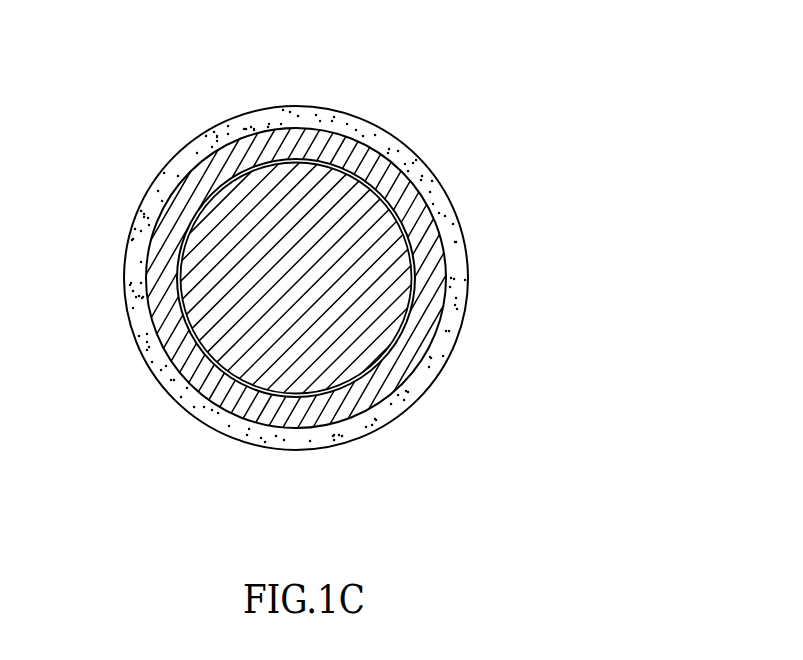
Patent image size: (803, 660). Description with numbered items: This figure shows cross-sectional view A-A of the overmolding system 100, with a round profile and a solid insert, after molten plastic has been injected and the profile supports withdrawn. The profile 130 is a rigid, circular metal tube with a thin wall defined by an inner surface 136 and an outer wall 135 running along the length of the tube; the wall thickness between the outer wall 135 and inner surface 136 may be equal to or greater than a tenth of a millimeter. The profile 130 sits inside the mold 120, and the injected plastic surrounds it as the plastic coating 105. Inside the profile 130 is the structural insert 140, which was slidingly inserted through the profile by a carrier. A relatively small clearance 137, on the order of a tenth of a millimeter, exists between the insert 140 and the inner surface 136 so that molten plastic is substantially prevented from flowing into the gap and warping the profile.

The overmolding system 100 is at (547, 89).
The plastic coating 105 is at (407, 398).
The mold 120 is at (178, 152).
The profile 130 is at (200, 387).
The outer wall 135 is at (433, 205).
The inner surface 136 is at (315, 393).
The clearance 137 is at (382, 168).
The structural insert 140 is at (390, 296).